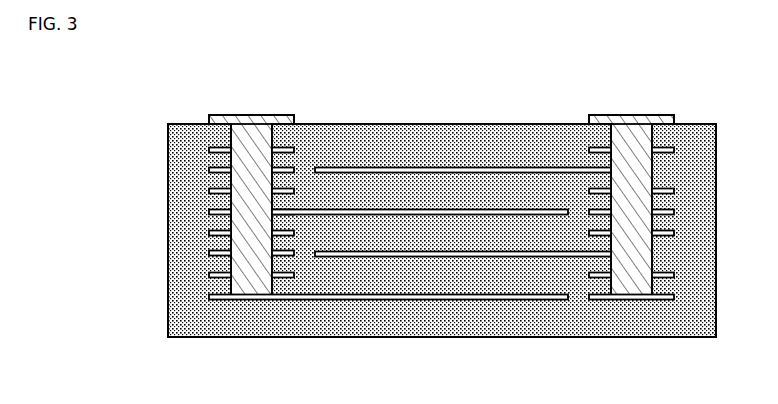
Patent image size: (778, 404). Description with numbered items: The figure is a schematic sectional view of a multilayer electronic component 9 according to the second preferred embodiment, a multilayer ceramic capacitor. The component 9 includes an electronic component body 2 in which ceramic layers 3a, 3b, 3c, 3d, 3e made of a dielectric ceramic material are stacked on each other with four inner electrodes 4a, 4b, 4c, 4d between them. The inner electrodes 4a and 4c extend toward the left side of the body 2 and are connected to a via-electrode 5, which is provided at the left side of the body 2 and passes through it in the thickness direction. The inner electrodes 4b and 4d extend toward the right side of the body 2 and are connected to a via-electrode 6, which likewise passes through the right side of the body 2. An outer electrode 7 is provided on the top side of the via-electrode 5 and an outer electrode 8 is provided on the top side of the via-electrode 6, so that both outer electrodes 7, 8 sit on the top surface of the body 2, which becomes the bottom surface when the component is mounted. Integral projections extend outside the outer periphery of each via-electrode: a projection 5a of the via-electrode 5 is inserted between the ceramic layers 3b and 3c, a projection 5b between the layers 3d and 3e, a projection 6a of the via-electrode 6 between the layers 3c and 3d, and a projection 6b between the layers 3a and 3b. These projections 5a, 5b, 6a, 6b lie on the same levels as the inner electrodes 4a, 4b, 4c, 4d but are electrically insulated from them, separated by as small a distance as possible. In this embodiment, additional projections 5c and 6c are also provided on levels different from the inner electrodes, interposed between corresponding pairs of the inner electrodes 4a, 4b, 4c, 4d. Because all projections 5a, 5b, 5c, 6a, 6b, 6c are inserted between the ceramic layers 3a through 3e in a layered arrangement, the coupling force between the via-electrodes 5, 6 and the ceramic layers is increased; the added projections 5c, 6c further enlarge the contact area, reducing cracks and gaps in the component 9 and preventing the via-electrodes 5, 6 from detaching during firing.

The electronic component body 2 is at (697, 125).
The ceramic layer 3a is at (332, 322).
The ceramic layer 3b is at (377, 277).
The ceramic layer 3c is at (428, 240).
The ceramic layer 3d is at (393, 184).
The ceramic layer 3e is at (355, 130).
The inner electrode 4a is at (470, 300).
The inner electrode 4b is at (523, 257).
The inner electrode 4c is at (428, 209).
The inner electrode 4d is at (473, 167).
The via-electrode 5 is at (252, 283).
The projection 5a is at (208, 253).
The projection 5b is at (208, 170).
The projection 5c is at (208, 148).
The via-electrode 6 is at (635, 285).
The projection 6a is at (674, 212).
The projection 6b is at (674, 297).
The projection 6c is at (674, 148).
The outer electrode 7 is at (220, 115).
The outer electrode 8 is at (597, 115).
The multilayer electronic component 9 is at (514, 114).